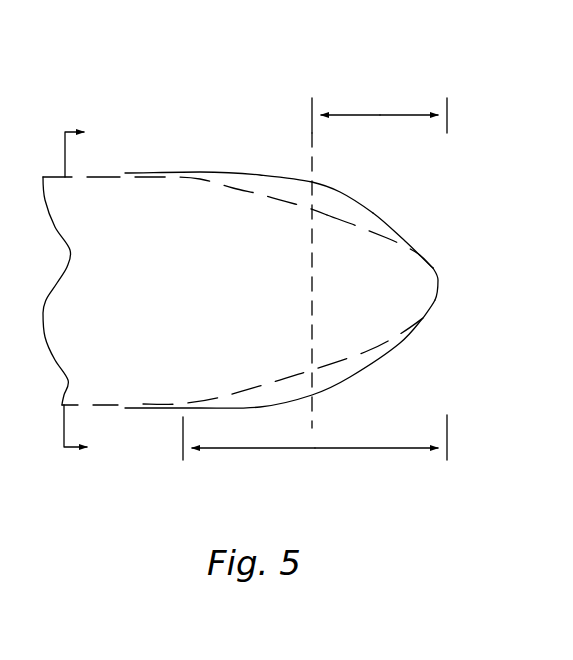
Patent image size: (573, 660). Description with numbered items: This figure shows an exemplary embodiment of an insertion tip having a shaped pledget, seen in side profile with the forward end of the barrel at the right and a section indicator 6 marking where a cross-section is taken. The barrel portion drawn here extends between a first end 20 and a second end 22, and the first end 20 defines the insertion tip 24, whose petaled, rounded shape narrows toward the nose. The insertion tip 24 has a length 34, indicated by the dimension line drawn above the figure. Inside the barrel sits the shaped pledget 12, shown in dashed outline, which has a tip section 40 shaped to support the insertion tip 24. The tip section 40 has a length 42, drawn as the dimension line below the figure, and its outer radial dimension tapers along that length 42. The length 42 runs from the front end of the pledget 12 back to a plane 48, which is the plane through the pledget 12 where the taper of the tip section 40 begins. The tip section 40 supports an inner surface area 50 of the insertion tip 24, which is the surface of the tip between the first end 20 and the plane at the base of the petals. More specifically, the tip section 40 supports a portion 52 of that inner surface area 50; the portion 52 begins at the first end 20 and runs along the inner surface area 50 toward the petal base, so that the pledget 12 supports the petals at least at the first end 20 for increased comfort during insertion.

The section line 6- 6 is at (89, 289).
The shaped pledget 12 is at (112, 177).
The first end 20 is at (423, 318).
The second end 22 is at (437, 268).
The insertion tip 24 is at (347, 198).
The length 34 is at (377, 115).
The tip section 40 is at (357, 226).
The length 42 is at (316, 448).
The plane 48 is at (183, 430).
The inner surface area 50 is at (243, 174).
The portion 52 is at (440, 288).